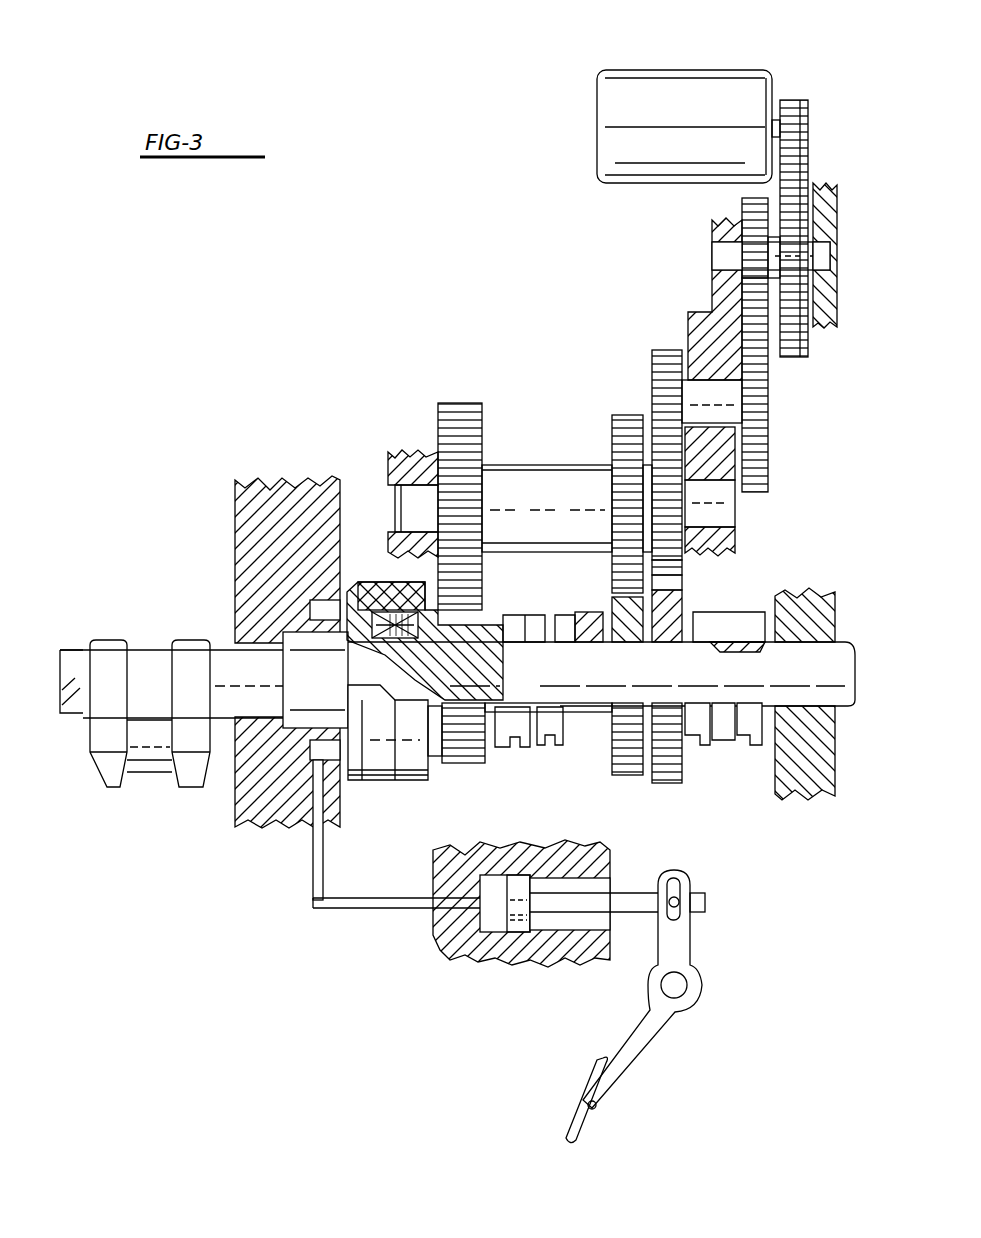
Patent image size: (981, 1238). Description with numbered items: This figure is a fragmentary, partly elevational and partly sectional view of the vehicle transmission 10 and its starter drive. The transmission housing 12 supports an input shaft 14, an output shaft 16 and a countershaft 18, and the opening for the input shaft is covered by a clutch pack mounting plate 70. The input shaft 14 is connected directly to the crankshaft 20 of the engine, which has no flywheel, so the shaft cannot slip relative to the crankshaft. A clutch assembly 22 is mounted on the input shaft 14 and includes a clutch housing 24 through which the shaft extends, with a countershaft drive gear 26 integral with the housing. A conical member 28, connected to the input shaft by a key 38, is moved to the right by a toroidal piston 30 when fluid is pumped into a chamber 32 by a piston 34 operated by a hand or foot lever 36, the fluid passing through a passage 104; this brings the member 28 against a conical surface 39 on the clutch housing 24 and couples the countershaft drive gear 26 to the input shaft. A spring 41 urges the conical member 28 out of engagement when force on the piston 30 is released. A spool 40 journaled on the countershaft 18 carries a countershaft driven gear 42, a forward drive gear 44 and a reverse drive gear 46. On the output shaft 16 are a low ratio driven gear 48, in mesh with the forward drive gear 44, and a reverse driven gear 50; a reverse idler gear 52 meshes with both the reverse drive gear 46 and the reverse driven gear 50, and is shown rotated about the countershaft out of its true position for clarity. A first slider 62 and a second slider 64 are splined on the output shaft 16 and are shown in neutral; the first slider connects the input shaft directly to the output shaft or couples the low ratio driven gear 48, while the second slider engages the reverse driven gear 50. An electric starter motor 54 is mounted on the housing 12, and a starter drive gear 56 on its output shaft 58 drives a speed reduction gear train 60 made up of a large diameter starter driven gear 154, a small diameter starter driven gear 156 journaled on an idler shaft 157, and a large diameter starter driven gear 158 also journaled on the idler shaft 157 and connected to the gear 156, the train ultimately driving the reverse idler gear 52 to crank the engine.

The vehicle transmission 10 is at (405, 350).
The transmission housing 12 is at (712, 225).
The input shaft 14 is at (283, 660).
The output shaft 16 is at (820, 712).
The countershaft 18 is at (398, 500).
The crankshaft 20 is at (88, 716).
The clutch assembly 22 is at (383, 775).
The clutch housing 24 is at (415, 782).
The countershaft drive gear 26 is at (470, 767).
The conical member 28 is at (345, 605).
The toroidal piston 30 is at (315, 830).
The chamber 32 is at (310, 752).
The piston 34 is at (508, 925).
The lever 36 is at (633, 1065).
The key 38 is at (380, 600).
The conical surface 39 is at (330, 668).
The spool 40 is at (538, 470).
The spring 41 is at (315, 680).
The countershaft driven gear 42 is at (460, 405).
The forward drive gear 44 is at (618, 415).
The reverse drive gear 46 is at (683, 565).
The low ratio driven gear 48 is at (630, 778).
The reverse driven gear 50 is at (668, 786).
The reverse idler gear 52 is at (660, 352).
The electric starter motor 54 is at (600, 110).
The starter drive gear 56 is at (800, 110).
The starter motor output shaft 58 is at (775, 125).
The speed reduction gear train 60 is at (800, 490).
The first slider 62 is at (512, 750).
The second slider 64 is at (752, 748).
The clutch pack mounting plate 70 is at (236, 530).
The passage 104 is at (388, 905).
The large diameter starter driven gear 154 is at (760, 470).
The small diameter starter driven gear 156 is at (742, 210).
The idler shaft 157 is at (722, 257).
The large diameter starter driven gear 158 is at (812, 355).